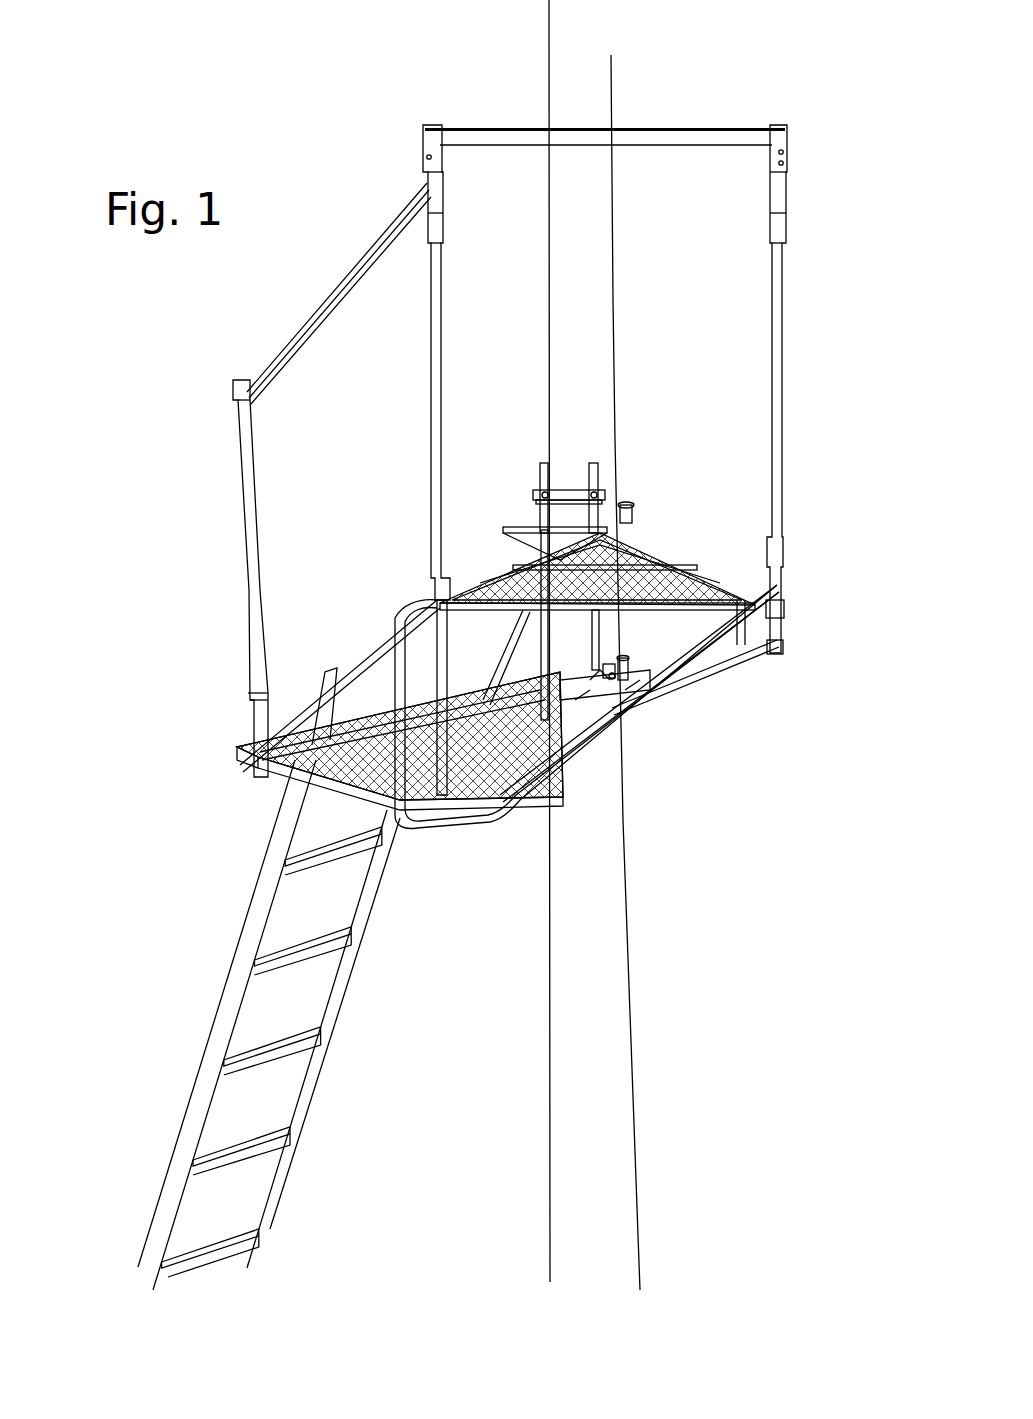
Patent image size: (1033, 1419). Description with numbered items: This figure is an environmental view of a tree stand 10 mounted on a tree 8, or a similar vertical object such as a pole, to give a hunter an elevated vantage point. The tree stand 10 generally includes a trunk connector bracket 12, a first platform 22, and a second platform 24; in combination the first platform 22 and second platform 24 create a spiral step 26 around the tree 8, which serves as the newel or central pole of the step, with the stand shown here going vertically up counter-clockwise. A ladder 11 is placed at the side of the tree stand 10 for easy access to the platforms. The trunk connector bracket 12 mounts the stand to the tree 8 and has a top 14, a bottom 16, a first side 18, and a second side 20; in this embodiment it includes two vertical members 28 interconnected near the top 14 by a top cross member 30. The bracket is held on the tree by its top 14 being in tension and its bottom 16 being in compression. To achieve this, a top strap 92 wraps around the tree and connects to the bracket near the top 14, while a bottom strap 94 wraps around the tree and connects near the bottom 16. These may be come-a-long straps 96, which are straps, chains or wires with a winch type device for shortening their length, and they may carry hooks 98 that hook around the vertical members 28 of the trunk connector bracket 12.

The tree 8 is at (575, 108).
The tree stand 10 is at (222, 321).
The ladder 11 is at (218, 1030).
The trunk connector bracket 12 is at (502, 440).
The top 14 is at (595, 470).
The bottom 16 is at (600, 700).
The first side 18 is at (535, 522).
The second side 20 is at (598, 510).
The first platform 22 is at (360, 640).
The second platform 24 is at (678, 548).
The spiral step 26 is at (413, 585).
The vertical members 28 is at (596, 618).
The top cross member 30 is at (566, 483).
The top strap 92 is at (635, 517).
The bottom strap 94 is at (628, 665).
The come-a-long straps 96 is at (609, 671).
The hooks 98 is at (598, 497).